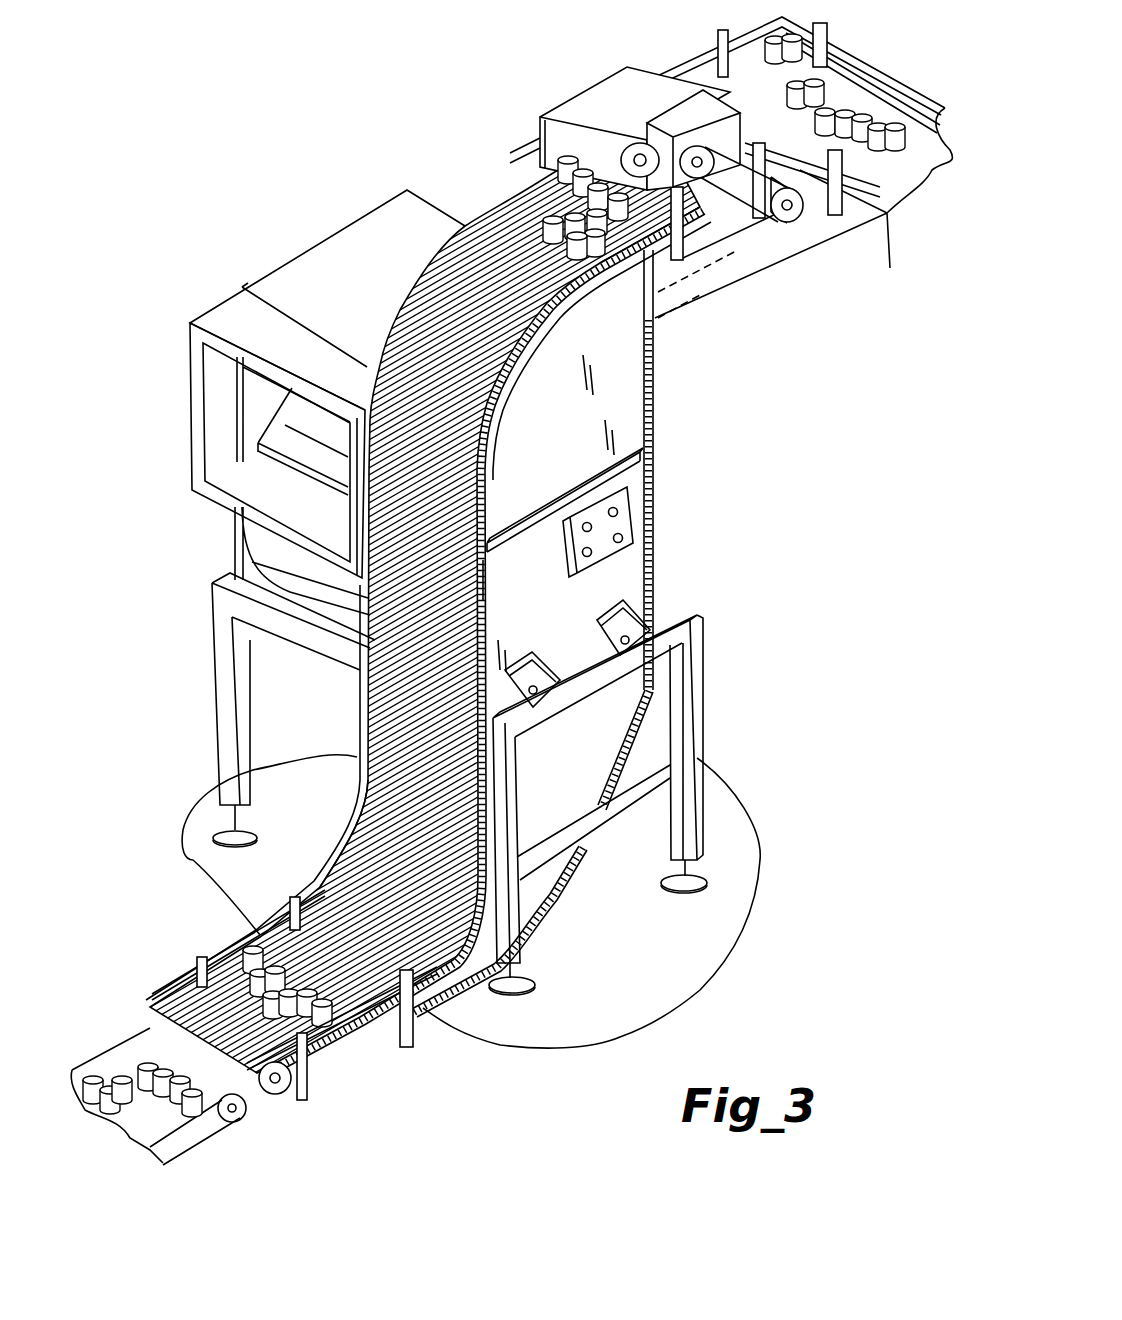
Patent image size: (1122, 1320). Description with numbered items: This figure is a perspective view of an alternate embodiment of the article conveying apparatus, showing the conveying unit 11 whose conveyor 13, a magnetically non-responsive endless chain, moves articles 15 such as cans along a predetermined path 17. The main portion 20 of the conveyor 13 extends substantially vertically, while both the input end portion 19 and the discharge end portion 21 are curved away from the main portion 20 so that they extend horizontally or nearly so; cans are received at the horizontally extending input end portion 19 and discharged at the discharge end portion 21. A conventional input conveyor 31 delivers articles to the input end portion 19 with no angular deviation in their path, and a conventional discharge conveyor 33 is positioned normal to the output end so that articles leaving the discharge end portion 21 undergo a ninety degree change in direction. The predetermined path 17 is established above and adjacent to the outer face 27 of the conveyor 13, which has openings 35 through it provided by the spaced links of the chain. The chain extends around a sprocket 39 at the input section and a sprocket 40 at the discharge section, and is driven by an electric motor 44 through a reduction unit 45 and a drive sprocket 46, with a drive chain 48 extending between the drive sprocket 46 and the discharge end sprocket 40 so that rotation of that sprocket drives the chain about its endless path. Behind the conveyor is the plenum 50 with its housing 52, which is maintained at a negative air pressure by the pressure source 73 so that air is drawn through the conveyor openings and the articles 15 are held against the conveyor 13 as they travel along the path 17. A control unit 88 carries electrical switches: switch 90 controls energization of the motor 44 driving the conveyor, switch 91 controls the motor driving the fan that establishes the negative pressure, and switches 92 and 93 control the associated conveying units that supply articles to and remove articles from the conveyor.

The conveying unit 11 is at (465, 180).
The conveyor 13 is at (537, 312).
The articles 15 is at (250, 982).
The predetermined path 17 is at (479, 452).
The input end portion 19 is at (207, 1040).
The main portion 20 is at (477, 575).
The discharge end portion 21 is at (634, 258).
The outer face 27 is at (380, 830).
The input conveyor 31 is at (130, 1057).
The discharge conveyor 33 is at (897, 135).
The openings 35 is at (385, 700).
The sprocket 39 is at (265, 1090).
The discharge end sprocket 40 is at (785, 215).
The electric motor 44 is at (640, 160).
The reduction unit 45 is at (658, 118).
The drive sprocket 46 is at (697, 160).
The drive chain 48 is at (735, 212).
The plenum 50 is at (628, 440).
The housing 52 is at (638, 347).
The pressure source 73 is at (265, 548).
The control unit 88 is at (575, 530).
The electrical switch 90 is at (595, 525).
The electrical switch 91 is at (620, 512).
The electrical switch 92 is at (587, 555).
The electrical switch 93 is at (620, 540).